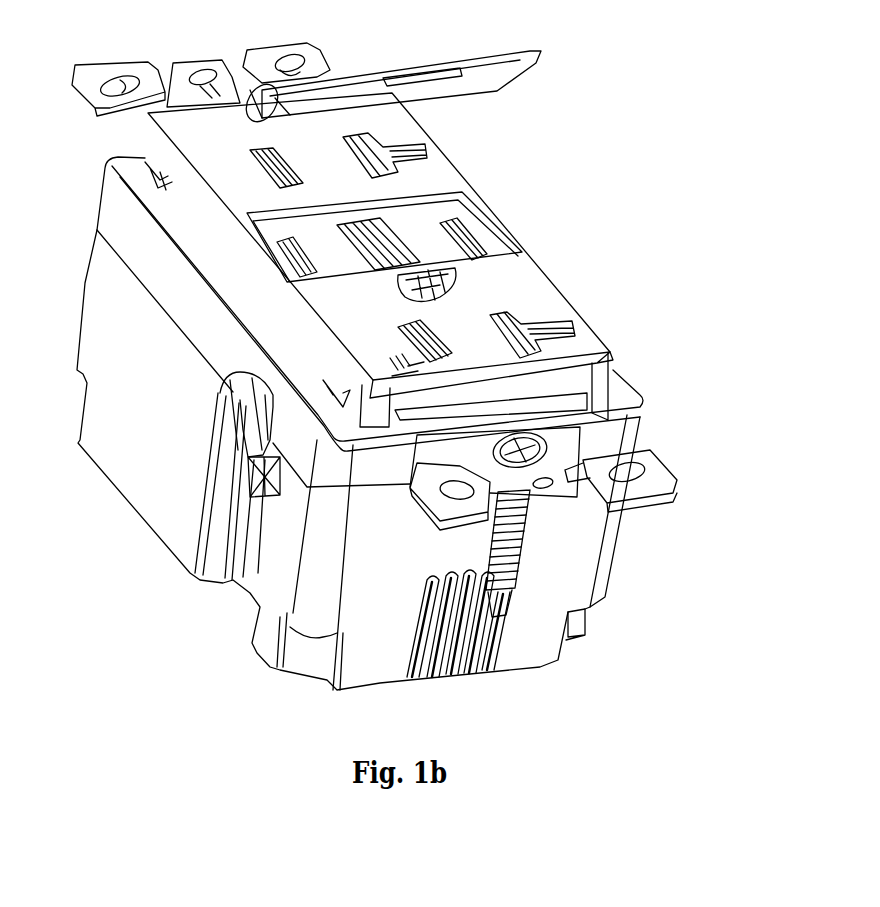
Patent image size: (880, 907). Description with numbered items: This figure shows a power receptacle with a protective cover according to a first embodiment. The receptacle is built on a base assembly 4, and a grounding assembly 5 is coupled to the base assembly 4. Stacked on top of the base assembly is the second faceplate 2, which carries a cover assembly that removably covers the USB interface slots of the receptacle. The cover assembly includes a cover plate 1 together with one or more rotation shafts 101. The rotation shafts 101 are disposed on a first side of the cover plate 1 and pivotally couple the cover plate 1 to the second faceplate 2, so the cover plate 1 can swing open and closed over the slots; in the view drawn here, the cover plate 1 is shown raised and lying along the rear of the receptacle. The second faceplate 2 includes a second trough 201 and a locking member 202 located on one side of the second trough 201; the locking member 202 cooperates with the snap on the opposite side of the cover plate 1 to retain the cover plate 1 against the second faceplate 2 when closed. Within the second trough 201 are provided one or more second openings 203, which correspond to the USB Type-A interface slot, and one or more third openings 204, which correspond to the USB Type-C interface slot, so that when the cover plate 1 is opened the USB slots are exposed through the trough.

The cover plate 1 is at (480, 52).
The rotation shafts 101 is at (538, 60).
The second faceplate 2 is at (580, 340).
The second trough 201 is at (473, 194).
The locking member 202 is at (417, 260).
The second openings 203 is at (363, 225).
The third openings 204 is at (470, 220).
The base assembly 4 is at (357, 672).
The grounding assembly 5 is at (665, 470).